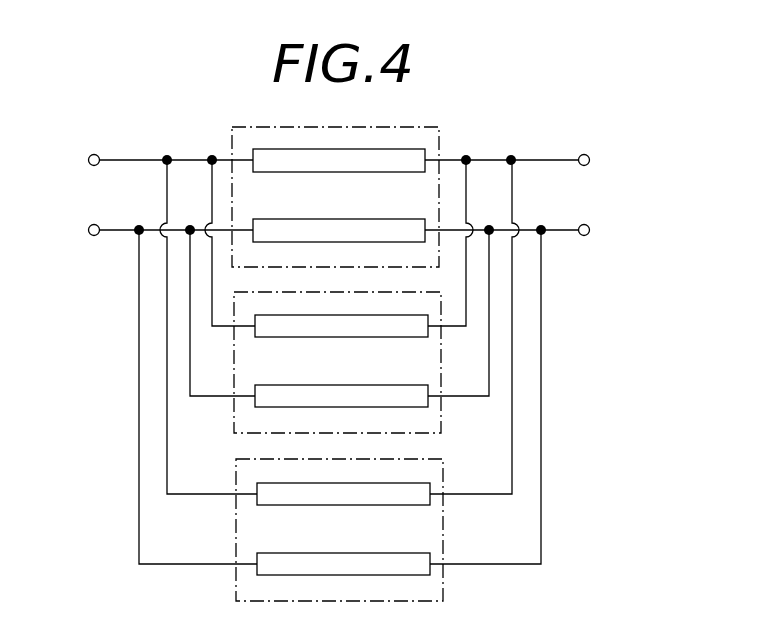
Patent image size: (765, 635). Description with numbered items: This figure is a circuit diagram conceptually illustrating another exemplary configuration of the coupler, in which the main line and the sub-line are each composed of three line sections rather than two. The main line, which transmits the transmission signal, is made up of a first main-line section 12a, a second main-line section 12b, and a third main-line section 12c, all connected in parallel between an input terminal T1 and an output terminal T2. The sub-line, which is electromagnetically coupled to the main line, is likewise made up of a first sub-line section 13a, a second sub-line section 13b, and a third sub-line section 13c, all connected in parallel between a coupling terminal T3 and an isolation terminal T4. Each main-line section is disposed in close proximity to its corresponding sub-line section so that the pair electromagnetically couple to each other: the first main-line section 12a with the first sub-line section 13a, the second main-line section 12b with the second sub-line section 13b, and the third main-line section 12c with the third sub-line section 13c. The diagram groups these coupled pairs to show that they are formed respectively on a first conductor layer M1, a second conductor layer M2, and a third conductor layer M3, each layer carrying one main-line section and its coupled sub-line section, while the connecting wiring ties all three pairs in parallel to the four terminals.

The input terminal T1 is at (99, 249).
The output terminal T2 is at (606, 246).
The coupling terminal T3 is at (113, 143).
The isolation terminal T4 is at (585, 142).
The first conductor layer M1 is at (440, 133).
The second conductor layer M2 is at (443, 422).
The third conductor layer M3 is at (445, 584).
The first main-line section 12a is at (332, 219).
The second main-line section 12b is at (338, 385).
The third main-line section 12c is at (331, 553).
The first sub-line section 13a is at (337, 172).
The second sub-line section 13b is at (347, 337).
The third sub-line section 13c is at (345, 505).